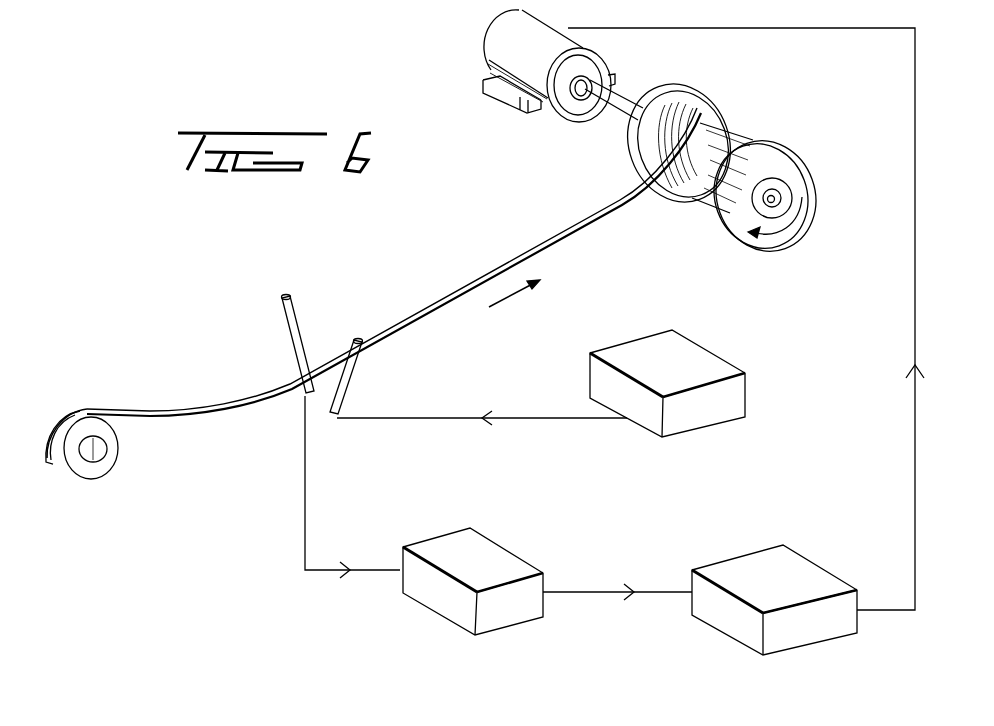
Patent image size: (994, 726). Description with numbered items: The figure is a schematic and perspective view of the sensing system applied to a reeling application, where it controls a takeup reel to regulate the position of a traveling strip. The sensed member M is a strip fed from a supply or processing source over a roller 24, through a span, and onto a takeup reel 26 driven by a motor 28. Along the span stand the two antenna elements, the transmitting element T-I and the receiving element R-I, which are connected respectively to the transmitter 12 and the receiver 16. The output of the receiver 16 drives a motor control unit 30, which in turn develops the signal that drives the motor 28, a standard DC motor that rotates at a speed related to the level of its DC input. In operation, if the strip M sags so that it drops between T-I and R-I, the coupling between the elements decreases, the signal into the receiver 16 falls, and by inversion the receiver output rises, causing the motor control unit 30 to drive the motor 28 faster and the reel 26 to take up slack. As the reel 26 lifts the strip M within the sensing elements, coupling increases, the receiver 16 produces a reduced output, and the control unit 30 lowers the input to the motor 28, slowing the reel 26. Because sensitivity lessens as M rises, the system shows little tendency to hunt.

The transmitter 12 is at (742, 402).
The receiver 16 is at (512, 570).
The roller 24 is at (75, 448).
The takeup reel 26 is at (783, 157).
The motor 28 is at (523, 100).
The motor control unit 30 is at (805, 580).
The sensed member M is at (232, 404).
The receiving antenna element R-I is at (282, 305).
The transmitting antenna element T-I is at (365, 386).